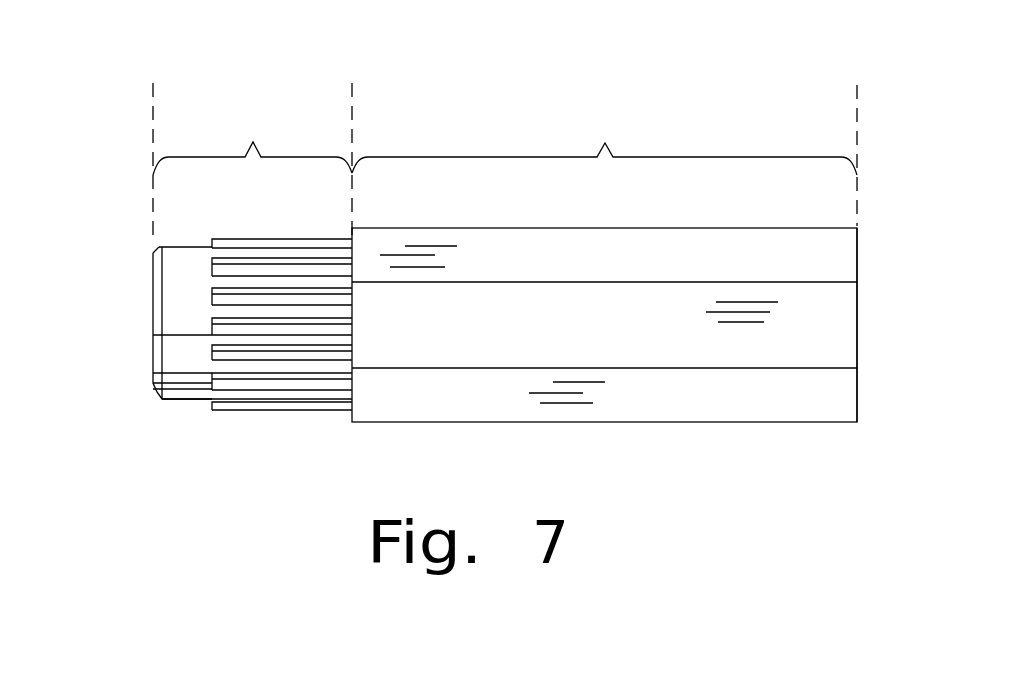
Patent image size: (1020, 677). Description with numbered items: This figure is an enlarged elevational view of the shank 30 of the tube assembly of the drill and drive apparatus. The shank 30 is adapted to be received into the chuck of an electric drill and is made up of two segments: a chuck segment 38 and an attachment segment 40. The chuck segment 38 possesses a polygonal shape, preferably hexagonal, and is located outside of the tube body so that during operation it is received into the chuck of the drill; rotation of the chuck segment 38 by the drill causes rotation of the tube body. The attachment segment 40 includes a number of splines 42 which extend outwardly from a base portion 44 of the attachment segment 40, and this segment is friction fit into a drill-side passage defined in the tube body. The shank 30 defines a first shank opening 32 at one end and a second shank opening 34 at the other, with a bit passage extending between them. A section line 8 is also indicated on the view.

The section line 8- 8 is at (43, 240).
The shank 30 is at (780, 466).
The first shank opening 32 is at (150, 363).
The second shank opening 34 is at (857, 348).
The chuck segment 38 is at (611, 105).
The attachment segment 40 is at (259, 104).
The splines 42 is at (297, 355).
The base portion 44 is at (192, 395).